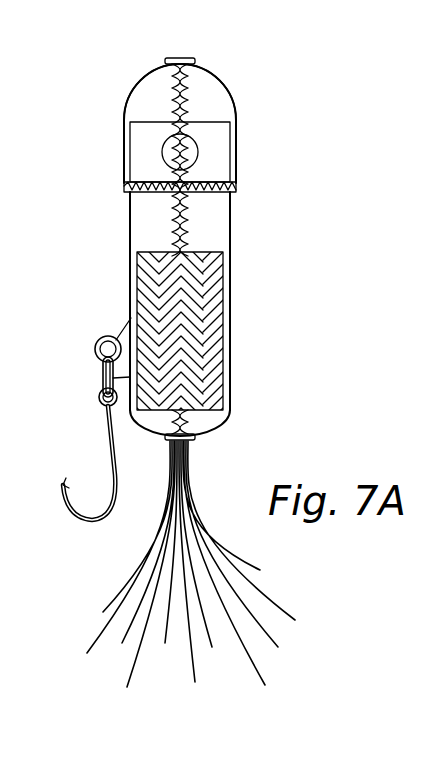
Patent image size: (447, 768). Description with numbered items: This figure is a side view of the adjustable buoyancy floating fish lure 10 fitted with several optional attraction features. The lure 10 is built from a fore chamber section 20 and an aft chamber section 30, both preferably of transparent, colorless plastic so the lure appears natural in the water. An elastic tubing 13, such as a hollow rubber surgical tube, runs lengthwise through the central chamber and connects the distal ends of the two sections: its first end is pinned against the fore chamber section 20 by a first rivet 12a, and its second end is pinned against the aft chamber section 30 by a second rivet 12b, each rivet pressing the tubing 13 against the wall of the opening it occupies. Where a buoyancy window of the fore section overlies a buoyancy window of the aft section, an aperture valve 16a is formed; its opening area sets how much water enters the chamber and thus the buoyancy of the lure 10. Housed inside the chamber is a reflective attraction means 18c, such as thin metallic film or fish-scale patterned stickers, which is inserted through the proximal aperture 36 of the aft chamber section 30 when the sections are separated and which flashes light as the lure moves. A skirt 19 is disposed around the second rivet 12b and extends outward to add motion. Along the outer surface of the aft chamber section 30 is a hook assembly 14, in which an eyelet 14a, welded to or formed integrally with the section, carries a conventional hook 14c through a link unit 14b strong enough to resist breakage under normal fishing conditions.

The adjustable buoyancy floating fish lure 10 is at (262, 184).
The first rivet 12a is at (192, 60).
The second rivet 12b is at (192, 440).
The elastic tubing 13 is at (182, 238).
The hook assembly 14 is at (71, 401).
The eyelet 14a is at (108, 337).
The link unit 14b is at (103, 372).
The hook 14c is at (60, 497).
The aperture valve 16a is at (162, 152).
The reflective attraction means 18c is at (218, 321).
The skirt 19 is at (278, 581).
The fore chamber section 20 is at (150, 73).
The aft chamber section 30 is at (130, 242).
The proximal aperture 36 is at (146, 121).